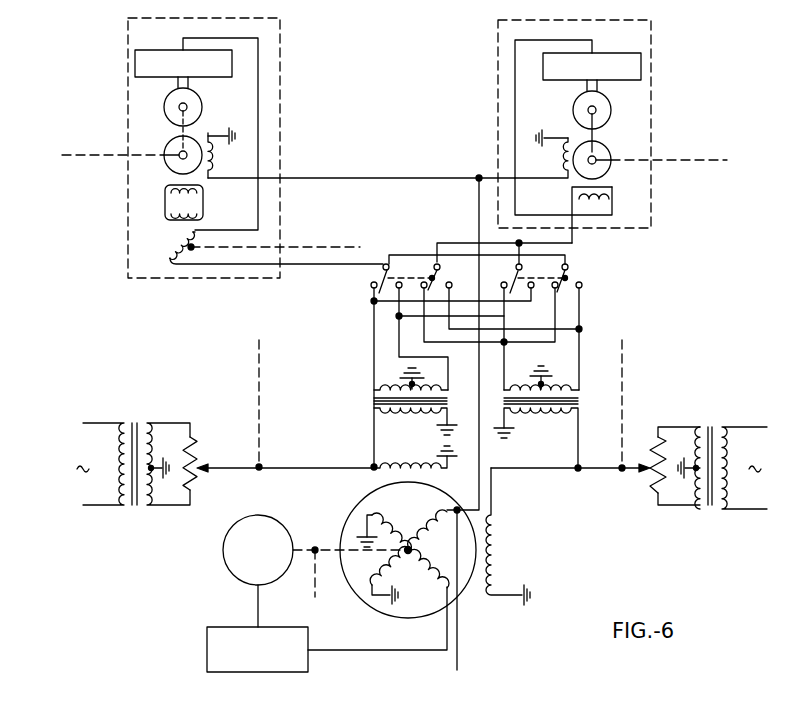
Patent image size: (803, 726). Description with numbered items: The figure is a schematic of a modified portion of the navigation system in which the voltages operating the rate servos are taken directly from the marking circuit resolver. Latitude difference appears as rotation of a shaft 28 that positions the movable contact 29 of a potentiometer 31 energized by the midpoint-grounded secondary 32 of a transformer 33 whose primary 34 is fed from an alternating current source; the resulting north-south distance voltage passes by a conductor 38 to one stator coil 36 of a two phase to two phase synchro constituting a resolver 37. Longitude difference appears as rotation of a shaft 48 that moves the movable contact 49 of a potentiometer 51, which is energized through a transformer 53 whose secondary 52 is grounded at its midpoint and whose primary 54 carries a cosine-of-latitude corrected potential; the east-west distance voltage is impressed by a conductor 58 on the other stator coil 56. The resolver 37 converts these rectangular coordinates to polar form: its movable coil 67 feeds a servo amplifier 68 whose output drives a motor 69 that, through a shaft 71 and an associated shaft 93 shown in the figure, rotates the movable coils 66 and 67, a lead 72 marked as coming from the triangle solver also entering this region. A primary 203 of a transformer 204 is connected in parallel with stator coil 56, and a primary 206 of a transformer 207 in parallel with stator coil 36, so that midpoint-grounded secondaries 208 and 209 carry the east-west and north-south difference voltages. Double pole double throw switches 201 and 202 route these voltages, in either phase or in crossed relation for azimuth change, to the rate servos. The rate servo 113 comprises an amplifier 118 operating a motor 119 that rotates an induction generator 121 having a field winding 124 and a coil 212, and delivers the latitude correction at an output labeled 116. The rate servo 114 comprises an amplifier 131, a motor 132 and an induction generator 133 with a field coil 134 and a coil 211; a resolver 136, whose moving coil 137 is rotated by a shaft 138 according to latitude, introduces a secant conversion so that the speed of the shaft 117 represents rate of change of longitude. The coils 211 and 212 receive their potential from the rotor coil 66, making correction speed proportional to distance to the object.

The rate servo 114 is at (281, 62).
The amplifier 131 is at (168, 50).
The motor 132 is at (202, 107).
The induction generator 133 is at (171, 143).
The shaft 117 is at (79, 156).
The coil 211 is at (219, 162).
The field coil 134 is at (197, 196).
The resolver 136 is at (259, 247).
The moving coil 137 is at (165, 258).
The shaft 138 is at (308, 248).
The rate servo 113 is at (651, 74).
The amplifier 118 is at (595, 53).
The motor 119 is at (573, 108).
The induction generator 121 is at (610, 151).
The latitude correction input 116 is at (702, 161).
The field winding 124 is at (603, 191).
The coil 212 is at (559, 165).
The double pole double throw switch 201 is at (468, 268).
The double pole double throw switch 202 is at (541, 266).
The shaft 48 is at (260, 393).
The transformer 204 is at (393, 400).
The secondary 208 is at (393, 384).
The primary 203 is at (437, 413).
The stator coil 56 is at (400, 464).
The conductor 58 is at (336, 467).
The shaft 28 is at (623, 383).
The transformer 207 is at (556, 417).
The secondary 209 is at (567, 385).
The primary 206 is at (557, 418).
The conductor 38 is at (611, 470).
The transformer 53 is at (149, 469).
The primary 54 is at (123, 458).
The secondary 52 is at (150, 428).
The movable contact 49 is at (194, 462).
The potentiometer 51 is at (193, 485).
The transformer 33 is at (697, 470).
The movable contact 29 is at (655, 473).
The potentiometer 31 is at (655, 440).
The secondary 32 is at (699, 432).
The primary 34 is at (729, 447).
The motor 69 is at (223, 550).
The shaft 71 is at (300, 551).
The shaft 93 is at (315, 600).
The resolver 37 is at (403, 566).
The rotor coil 66 is at (413, 555).
The movable coil 67 is at (380, 580).
The stator coil 36 is at (499, 563).
The servo amplifier 68 is at (296, 672).
The lead from triangle solver 72 is at (458, 665).